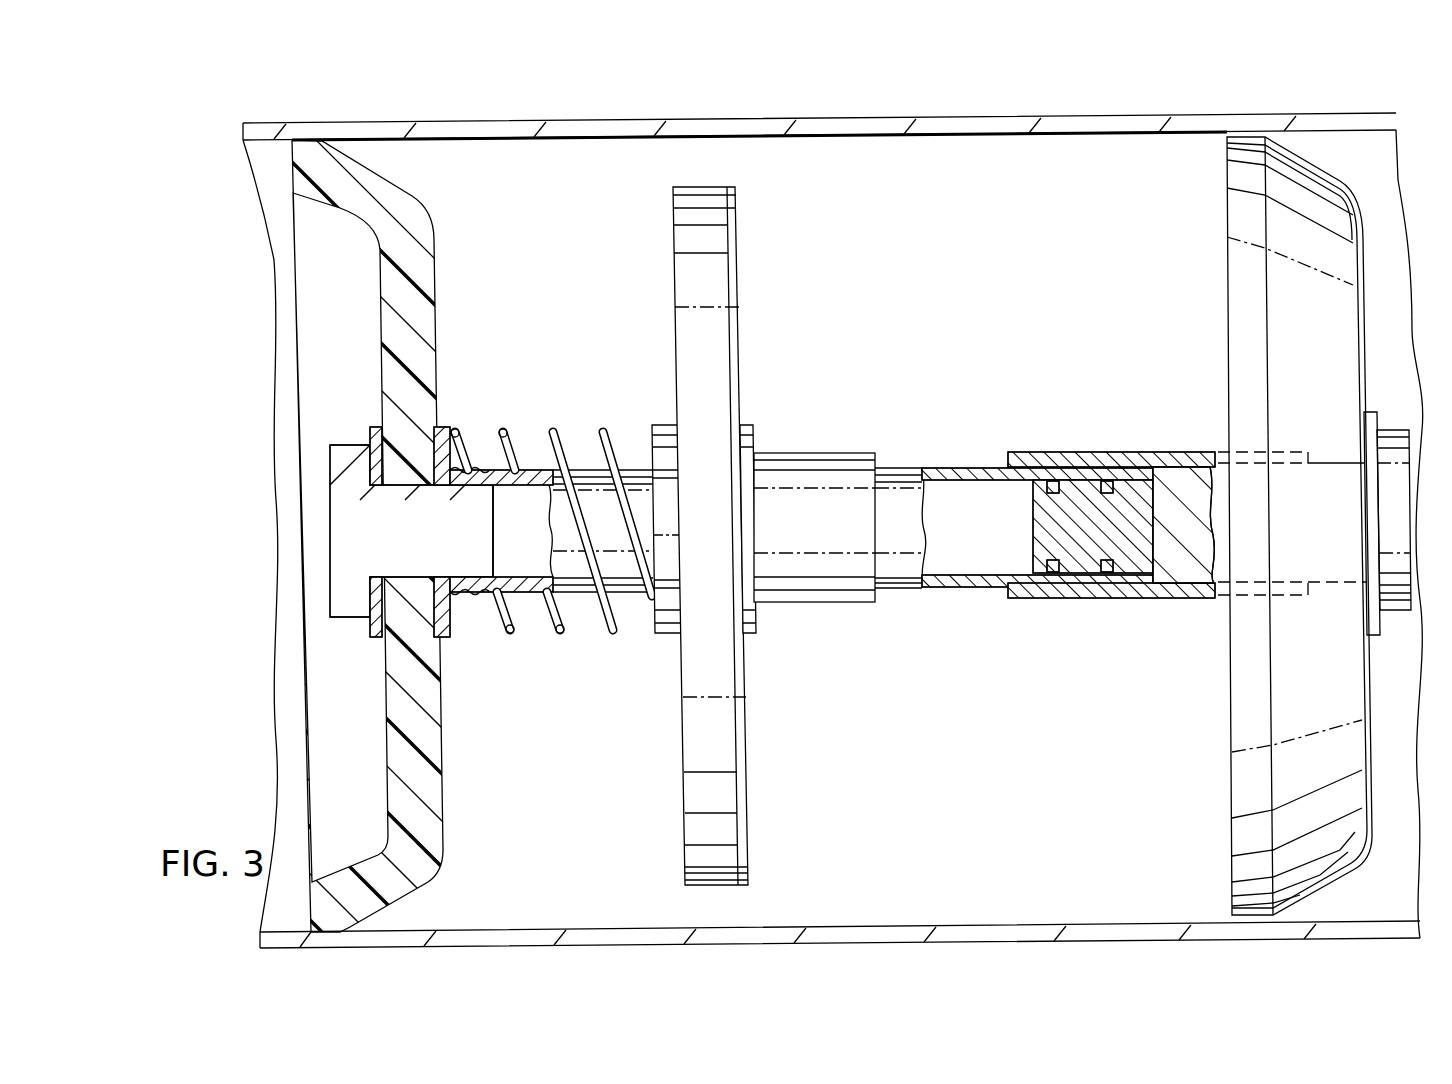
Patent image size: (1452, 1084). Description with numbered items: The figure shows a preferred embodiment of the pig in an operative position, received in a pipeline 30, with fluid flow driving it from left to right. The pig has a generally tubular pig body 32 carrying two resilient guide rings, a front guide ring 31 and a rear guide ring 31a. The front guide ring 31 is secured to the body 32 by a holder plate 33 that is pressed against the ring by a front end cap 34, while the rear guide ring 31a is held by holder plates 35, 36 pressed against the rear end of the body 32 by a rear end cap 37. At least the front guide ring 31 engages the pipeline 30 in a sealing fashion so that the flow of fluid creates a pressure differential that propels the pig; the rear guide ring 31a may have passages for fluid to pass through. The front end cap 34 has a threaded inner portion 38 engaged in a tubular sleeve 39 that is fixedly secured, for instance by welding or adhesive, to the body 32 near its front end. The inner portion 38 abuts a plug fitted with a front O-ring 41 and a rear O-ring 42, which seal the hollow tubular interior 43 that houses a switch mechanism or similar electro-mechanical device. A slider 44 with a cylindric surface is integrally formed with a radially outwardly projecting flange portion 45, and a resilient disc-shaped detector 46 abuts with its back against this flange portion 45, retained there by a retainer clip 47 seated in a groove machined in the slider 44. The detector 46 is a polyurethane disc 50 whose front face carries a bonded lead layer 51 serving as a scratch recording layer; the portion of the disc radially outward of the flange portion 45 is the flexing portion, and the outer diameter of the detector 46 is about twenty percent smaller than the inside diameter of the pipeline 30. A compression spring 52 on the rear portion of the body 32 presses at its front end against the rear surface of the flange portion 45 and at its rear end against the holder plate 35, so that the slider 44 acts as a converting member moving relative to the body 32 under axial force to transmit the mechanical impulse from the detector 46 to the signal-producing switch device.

The pipeline 30 is at (583, 140).
The front guide ring 31 is at (1320, 384).
The rear guide ring 31a is at (394, 292).
The pig body 32 is at (527, 605).
The holder plate 33 is at (1375, 413).
The front end cap 34 is at (1392, 615).
The holder plate 35 is at (450, 430).
The holder plate 36 is at (370, 432).
The rear end cap 37 is at (345, 605).
The threaded inner portion 38 is at (1185, 487).
The tubular sleeve 39 is at (1103, 600).
The front O-ring 41 is at (1107, 481).
The rear O-ring 42 is at (1053, 481).
The hollow tubular interior 43 is at (947, 560).
The slider 44 is at (833, 495).
The flange portion 45 is at (665, 427).
The detector 46 is at (703, 536).
The retainer clip 47 is at (756, 428).
The polyurethane disc 50 is at (690, 297).
The lead layer 51 is at (735, 337).
The compression spring 52 is at (613, 636).